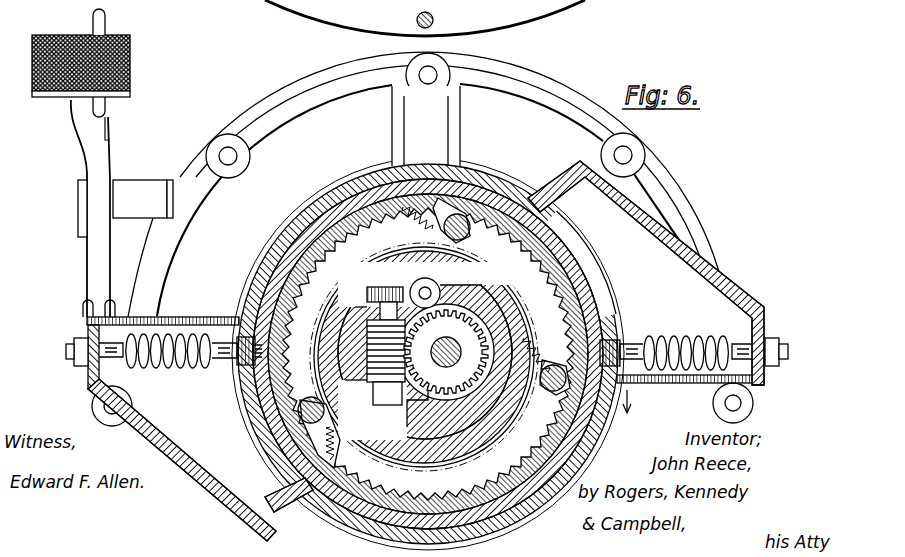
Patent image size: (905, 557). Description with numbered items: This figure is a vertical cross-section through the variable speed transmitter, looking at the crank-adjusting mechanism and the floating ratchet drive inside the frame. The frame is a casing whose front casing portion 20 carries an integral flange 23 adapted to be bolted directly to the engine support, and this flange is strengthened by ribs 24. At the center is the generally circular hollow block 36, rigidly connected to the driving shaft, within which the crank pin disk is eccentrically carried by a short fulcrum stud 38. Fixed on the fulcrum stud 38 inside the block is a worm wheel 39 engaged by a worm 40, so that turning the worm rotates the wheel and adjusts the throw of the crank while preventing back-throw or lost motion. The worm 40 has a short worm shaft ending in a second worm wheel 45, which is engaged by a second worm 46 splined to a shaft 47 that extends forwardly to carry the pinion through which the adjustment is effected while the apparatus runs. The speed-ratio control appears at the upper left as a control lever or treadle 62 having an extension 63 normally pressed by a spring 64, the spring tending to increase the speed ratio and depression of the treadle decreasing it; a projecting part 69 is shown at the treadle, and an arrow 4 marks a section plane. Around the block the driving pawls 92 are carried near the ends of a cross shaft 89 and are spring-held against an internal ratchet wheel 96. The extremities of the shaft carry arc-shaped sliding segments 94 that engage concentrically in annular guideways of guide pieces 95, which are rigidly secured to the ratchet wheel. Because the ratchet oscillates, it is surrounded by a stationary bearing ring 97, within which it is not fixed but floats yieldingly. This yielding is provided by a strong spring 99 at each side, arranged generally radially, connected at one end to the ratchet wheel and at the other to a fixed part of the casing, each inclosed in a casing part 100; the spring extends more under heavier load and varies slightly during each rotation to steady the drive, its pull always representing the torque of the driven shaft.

The direction arrow 4 is at (634, 401).
The front casing portion 20 is at (268, 238).
The integral flange 23 is at (238, 108).
The ribs 24 is at (392, 128).
The hollow block 36 is at (430, 425).
The fulcrum stud 38 is at (446, 340).
The worm wheel 39 is at (446, 352).
The worm 40 is at (330, 320).
The second worm wheel 45 is at (352, 262).
The second worm 46 is at (388, 286).
The shaft 47 is at (432, 292).
The control lever 62 is at (132, 62).
The extension 63 is at (87, 266).
The spring 64 is at (83, 310).
The stem 69 is at (106, 16).
The cross shaft 89 is at (236, 430).
The pawl 92 is at (446, 208).
The sliding segments 94 is at (528, 230).
The guide pieces 95 is at (585, 268).
The internal ratchet wheel 96 is at (330, 272).
The stationary bearing ring 97 is at (306, 210).
The spring 99 is at (168, 370).
The casing part 100 is at (760, 272).